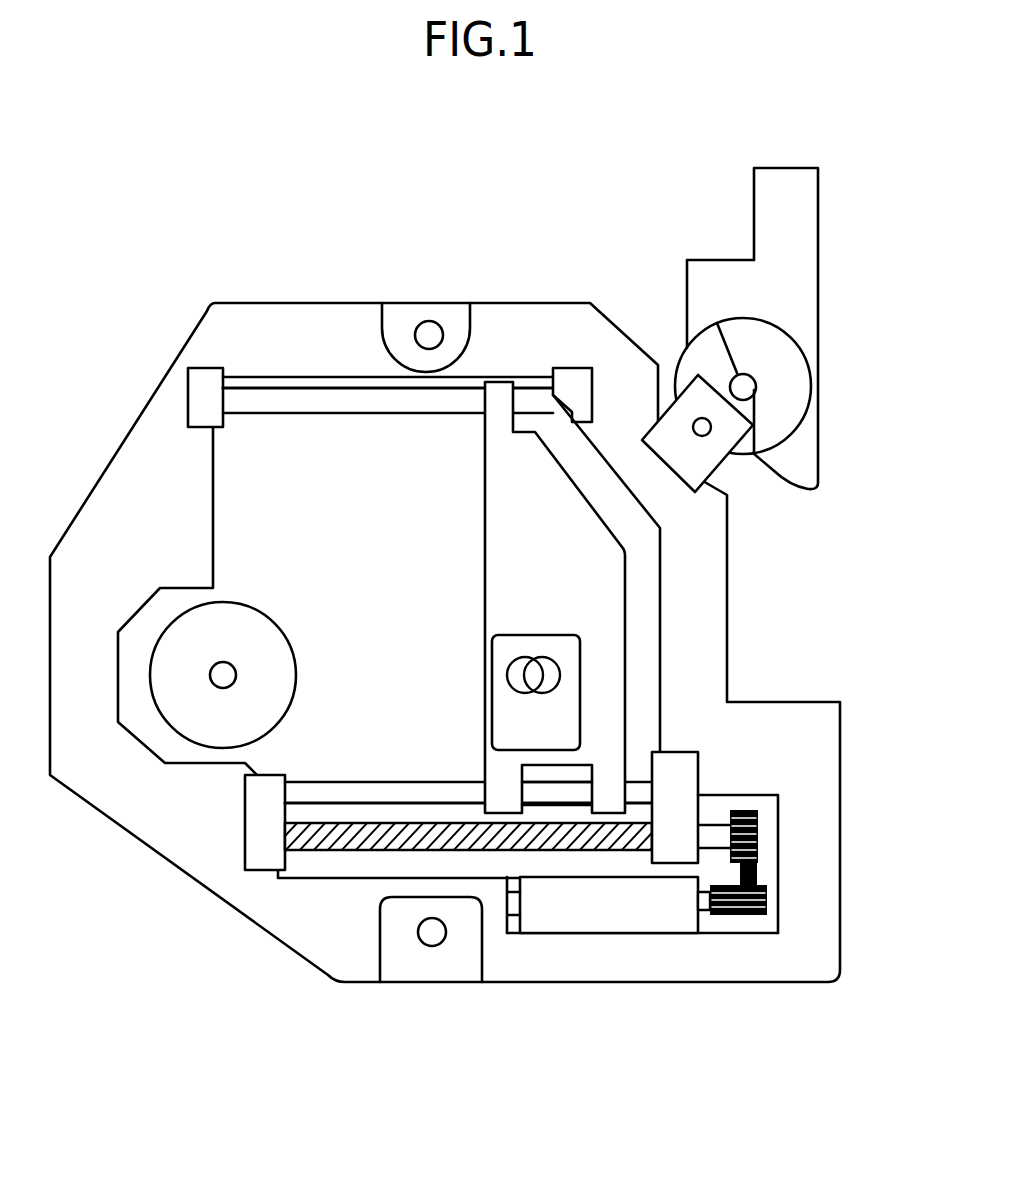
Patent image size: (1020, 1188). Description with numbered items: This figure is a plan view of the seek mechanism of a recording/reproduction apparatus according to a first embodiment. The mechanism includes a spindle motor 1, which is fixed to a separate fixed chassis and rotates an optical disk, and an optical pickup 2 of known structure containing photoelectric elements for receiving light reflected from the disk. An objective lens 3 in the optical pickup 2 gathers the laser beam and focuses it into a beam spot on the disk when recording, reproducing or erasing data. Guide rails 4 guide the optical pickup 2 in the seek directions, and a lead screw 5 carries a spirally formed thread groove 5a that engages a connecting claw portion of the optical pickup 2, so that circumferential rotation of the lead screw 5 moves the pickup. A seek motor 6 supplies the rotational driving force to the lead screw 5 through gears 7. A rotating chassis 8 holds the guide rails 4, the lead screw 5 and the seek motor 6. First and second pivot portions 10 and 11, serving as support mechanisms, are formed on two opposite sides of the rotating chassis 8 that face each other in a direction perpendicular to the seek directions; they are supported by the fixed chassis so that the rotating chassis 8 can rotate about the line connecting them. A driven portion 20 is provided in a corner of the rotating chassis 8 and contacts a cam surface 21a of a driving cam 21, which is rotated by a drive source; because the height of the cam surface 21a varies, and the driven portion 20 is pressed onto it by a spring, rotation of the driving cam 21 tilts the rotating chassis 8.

The spindle motor 1 is at (247, 630).
The optical pickup 2 is at (608, 663).
The objective lens 3 is at (530, 677).
The guide rails 4 is at (332, 383).
The lead screw 5 is at (500, 880).
The thread groove 5a is at (423, 837).
The seek motor 6 is at (595, 903).
The gears 7 is at (767, 902).
The rotating chassis 8 is at (253, 320).
The first pivot portion 10 is at (427, 322).
The second pivot portion 11 is at (430, 946).
The driven portion 20 is at (697, 417).
The driving cam 21 is at (801, 328).
The cam surface 21a is at (788, 370).